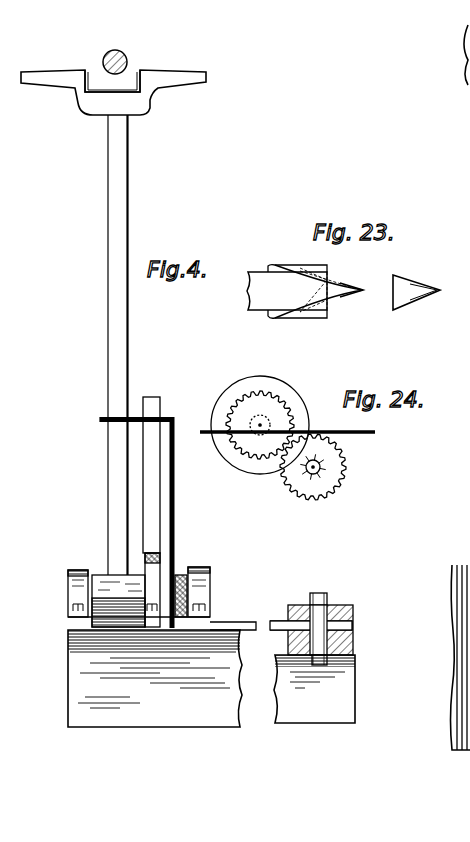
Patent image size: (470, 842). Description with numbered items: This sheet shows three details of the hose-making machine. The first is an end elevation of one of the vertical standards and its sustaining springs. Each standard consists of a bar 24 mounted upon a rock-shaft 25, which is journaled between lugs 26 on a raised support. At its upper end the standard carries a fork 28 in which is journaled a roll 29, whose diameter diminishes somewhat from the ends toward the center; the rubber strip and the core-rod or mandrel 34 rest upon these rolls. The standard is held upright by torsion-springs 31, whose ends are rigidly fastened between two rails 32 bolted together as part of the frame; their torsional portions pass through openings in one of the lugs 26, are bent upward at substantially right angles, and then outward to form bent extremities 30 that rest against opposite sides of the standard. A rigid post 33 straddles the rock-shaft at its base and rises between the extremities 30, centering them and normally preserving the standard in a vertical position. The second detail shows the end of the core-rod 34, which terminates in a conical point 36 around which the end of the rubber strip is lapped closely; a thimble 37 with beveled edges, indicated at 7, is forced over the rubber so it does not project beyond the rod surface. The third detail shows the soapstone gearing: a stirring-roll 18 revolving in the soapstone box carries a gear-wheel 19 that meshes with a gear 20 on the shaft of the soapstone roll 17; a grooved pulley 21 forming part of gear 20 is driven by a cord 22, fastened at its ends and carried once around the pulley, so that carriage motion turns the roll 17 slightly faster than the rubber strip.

In FIG. 23, the blade edge 7 is at (280, 265).
In FIG. 24, the soapstone roll 17 is at (260, 417).
In FIG. 24, the stirring-roll 18 is at (320, 468).
In FIG. 24, the gear-wheel 19 is at (319, 492).
In FIG. 24, the gear 20 is at (256, 452).
In FIG. 24, the grooved roll or pulley 21 is at (267, 418).
In FIG. 24, the cord or belt 22 is at (203, 434).
In FIG. 4, the bar 24 is at (101, 345).
In FIG. 4, the rock-shaft 25 is at (100, 575).
In FIG. 4, the lugs 26 is at (72, 584).
In FIG. 4, the fork 28 is at (158, 100).
In FIG. 4, the roll 29 is at (140, 74).
In FIG. 4, the bent extremities of torsion-springs 30 is at (100, 421).
In FIG. 4, the torsion-springs 31 is at (238, 622).
In FIG. 4, the rails 32 is at (353, 610).
In FIG. 4, the rigid post 33 is at (160, 399).
In FIG. 4, the core-rod or mandrel 34 is at (123, 54).
In FIG. 23, the core-rod or mandrel 34 is at (287, 291).
In FIG. 23, the conical point 36 is at (364, 289).
In FIG. 23, the thimble 37 is at (432, 286).